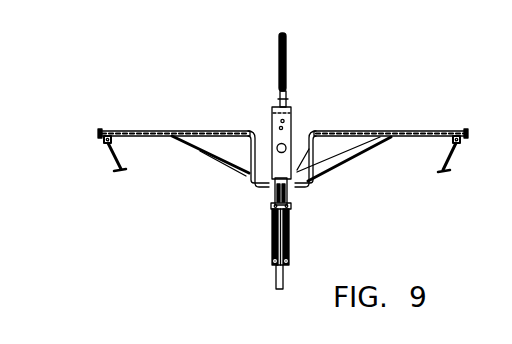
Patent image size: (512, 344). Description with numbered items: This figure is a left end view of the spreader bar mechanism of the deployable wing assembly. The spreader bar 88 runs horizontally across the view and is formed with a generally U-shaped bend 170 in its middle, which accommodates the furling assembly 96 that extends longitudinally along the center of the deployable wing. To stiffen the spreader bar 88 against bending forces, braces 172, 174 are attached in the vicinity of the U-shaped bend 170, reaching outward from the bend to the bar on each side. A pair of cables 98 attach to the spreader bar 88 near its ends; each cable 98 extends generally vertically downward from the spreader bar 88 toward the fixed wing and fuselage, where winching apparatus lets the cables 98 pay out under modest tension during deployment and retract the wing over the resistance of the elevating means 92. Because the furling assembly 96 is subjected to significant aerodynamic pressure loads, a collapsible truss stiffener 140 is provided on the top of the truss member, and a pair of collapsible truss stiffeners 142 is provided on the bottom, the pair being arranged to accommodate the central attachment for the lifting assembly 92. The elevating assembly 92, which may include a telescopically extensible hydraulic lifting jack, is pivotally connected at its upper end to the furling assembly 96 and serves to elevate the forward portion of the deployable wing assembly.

The spreader bar 88 is at (140, 130).
The cable 98 is at (111, 153).
The brace 172 is at (209, 159).
The brace 174 is at (232, 170).
The collapsible truss stiffener 140 is at (287, 57).
The furling assembly 96 is at (293, 130).
The U-shaped bend 170 is at (258, 137).
The collapsible truss stiffener 142 is at (268, 234).
The elevating assembly 92 is at (271, 276).